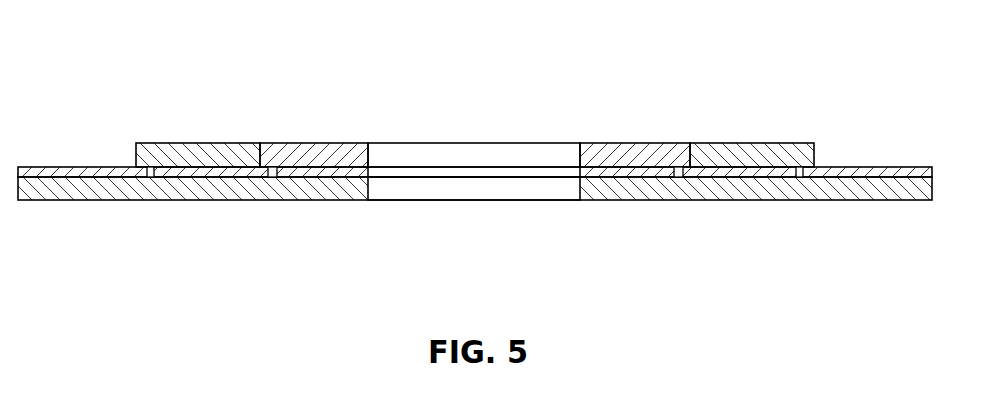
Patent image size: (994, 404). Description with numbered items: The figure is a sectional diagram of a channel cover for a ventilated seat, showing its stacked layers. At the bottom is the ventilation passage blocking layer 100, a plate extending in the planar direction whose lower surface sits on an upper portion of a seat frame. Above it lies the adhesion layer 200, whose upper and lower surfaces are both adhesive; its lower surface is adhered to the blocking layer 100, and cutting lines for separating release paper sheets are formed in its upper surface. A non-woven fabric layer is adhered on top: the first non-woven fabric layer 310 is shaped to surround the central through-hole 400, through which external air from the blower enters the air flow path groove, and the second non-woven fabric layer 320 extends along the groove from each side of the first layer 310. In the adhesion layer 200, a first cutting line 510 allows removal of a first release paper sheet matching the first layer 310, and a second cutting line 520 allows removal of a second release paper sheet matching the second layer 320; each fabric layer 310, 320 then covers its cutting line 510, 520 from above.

The ventilation passage blocking layer 100 is at (80, 192).
The adhesion layer 200 is at (77, 168).
The first non-woven fabric layer 310 is at (318, 148).
The second non-woven fabric layer 320 is at (210, 148).
The through-hole 400 is at (490, 154).
The first cutting line 510 is at (272, 176).
The second cutting line 520 is at (151, 176).